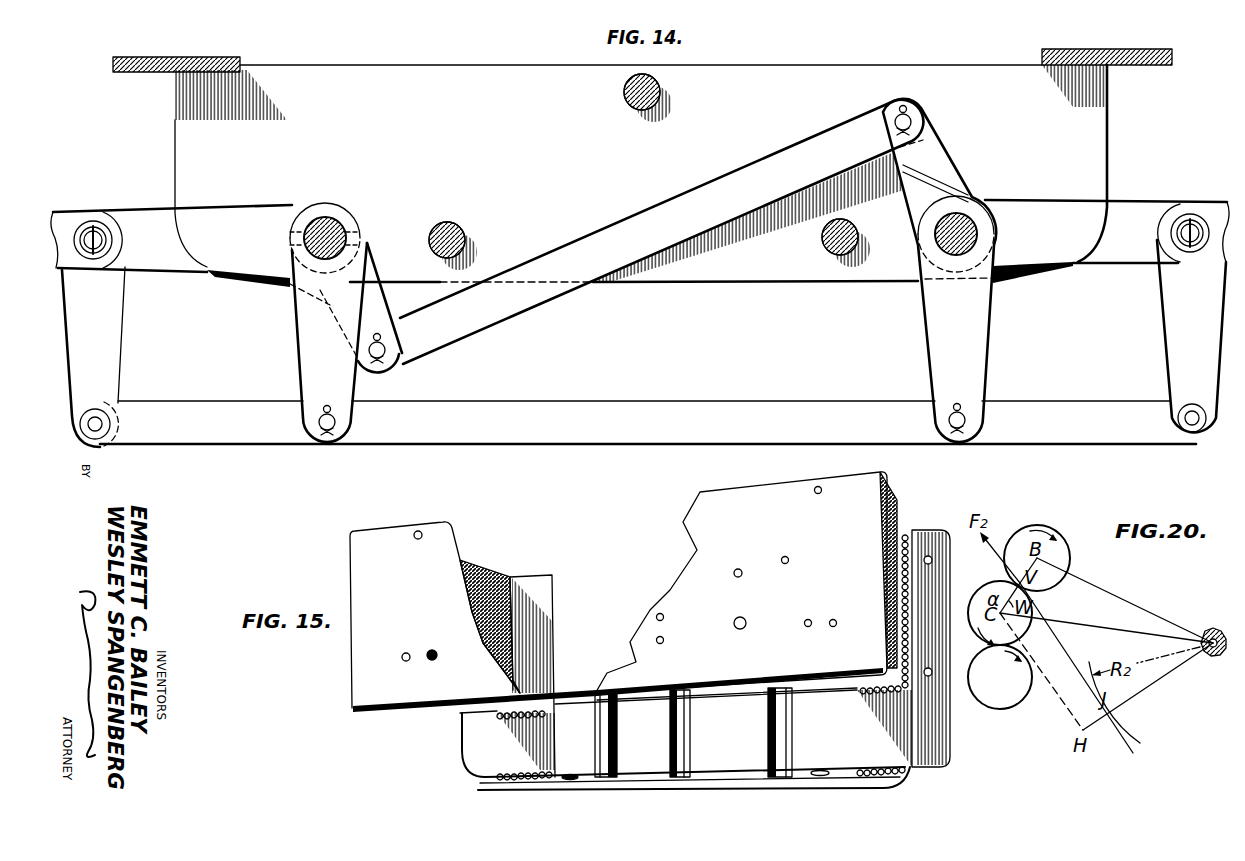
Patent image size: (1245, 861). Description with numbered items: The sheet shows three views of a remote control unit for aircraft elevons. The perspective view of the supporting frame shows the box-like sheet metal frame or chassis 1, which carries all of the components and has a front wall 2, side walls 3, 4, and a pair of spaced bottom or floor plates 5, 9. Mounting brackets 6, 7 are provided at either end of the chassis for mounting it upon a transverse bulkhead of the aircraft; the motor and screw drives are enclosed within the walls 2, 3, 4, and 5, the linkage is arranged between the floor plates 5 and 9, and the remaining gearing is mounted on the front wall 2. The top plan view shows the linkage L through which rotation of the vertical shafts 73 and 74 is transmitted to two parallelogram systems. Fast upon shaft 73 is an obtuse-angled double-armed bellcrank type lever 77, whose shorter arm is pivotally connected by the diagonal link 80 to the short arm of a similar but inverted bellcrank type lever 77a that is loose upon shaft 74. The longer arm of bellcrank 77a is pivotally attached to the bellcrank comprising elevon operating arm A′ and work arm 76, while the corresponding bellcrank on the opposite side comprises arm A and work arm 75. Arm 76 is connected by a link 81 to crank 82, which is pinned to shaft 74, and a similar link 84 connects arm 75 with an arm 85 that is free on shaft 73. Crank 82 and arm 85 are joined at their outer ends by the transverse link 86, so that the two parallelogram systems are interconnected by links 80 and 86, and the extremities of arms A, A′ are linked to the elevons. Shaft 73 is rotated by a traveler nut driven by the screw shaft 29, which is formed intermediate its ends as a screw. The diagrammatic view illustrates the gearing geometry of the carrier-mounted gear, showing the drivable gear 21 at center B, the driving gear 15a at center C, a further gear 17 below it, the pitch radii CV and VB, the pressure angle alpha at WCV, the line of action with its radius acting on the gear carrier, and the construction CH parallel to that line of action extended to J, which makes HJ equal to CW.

In FIG. 14, the floor plate 5 is at (340, 76).
In FIG. 15, the floor plate 5 is at (722, 688).
In FIG. 14, the mounting bracket 6 is at (150, 60).
In FIG. 15, the mounting bracket 6 is at (527, 580).
In FIG. 14, the mounting bracket 7 is at (1128, 52).
In FIG. 15, the mounting bracket 7 is at (925, 537).
In FIG. 14, the shaft 73 is at (967, 217).
In FIG. 14, the shaft 74 is at (335, 222).
In FIG. 14, the work arm 75 is at (1183, 373).
In FIG. 14, the work arm 76 is at (105, 385).
In FIG. 14, the bellcrank type lever 77 is at (1022, 214).
In FIG. 14, the bellcrank type lever 77a is at (243, 219).
In FIG. 14, the link 80 is at (678, 214).
In FIG. 14, the link 81 is at (210, 425).
In FIG. 14, the crank 82 is at (317, 377).
In FIG. 14, the link 84 is at (1055, 422).
In FIG. 14, the arm 85 is at (968, 373).
In FIG. 14, the link 86 is at (570, 427).
In FIG. 14, the linkage L is at (606, 219).
In FIG. 14, the elevon operating arm A is at (1194, 214).
In FIG. 14, the elevon operating arm A' is at (89, 221).
In FIG. 15, the frame or chassis 1 is at (365, 525).
In FIG. 15, the front wall 2 is at (383, 547).
In FIG. 15, the side wall 3 is at (483, 570).
In FIG. 15, the side wall 4 is at (895, 512).
In FIG. 15, the floor plate 9 is at (715, 776).
In FIG. 20, the roller B 21 is at (1067, 565).
In FIG. 20, the roller C 15a is at (1000, 582).
In FIG. 20, the roller 17 is at (1000, 708).
In FIG. 20, the screw shaft 29 is at (1220, 626).